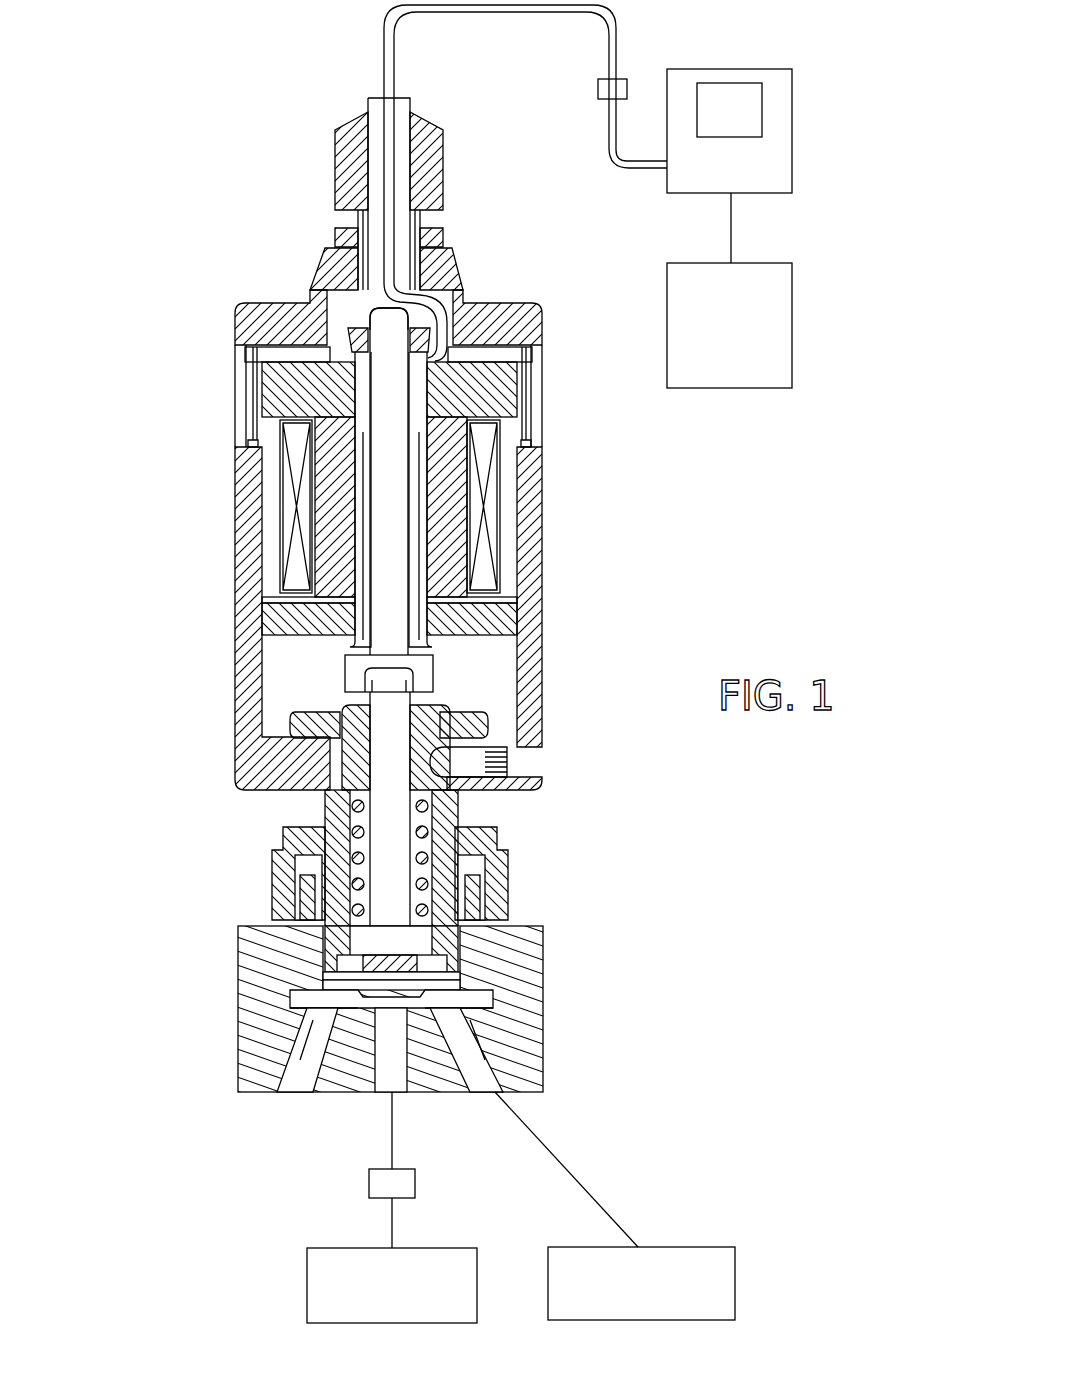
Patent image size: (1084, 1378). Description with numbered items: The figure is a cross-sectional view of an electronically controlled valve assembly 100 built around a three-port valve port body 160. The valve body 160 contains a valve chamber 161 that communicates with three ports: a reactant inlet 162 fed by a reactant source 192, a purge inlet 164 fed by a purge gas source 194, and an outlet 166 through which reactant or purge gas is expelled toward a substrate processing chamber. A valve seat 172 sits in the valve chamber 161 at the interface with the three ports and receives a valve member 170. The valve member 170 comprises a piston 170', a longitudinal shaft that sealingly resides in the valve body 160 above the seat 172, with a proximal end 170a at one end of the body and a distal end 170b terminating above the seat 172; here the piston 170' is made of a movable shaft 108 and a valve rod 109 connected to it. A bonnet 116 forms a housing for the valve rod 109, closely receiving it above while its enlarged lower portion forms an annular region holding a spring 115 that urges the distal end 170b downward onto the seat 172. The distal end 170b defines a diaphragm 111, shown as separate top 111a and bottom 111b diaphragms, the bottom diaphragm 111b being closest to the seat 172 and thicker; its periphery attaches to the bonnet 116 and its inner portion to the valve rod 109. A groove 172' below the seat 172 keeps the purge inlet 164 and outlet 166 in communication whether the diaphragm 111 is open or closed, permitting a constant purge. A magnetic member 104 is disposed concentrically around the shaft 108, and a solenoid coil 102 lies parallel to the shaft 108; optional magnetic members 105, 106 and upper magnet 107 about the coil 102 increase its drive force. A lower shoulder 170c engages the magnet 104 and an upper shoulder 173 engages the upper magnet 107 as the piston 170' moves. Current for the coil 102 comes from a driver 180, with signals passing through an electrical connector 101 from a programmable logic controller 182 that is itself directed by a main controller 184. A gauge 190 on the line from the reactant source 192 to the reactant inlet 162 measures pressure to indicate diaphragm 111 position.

The valve assembly 100 is at (231, 168).
The electrical connector 101 is at (598, 90).
The solenoid coil 102 is at (285, 475).
The magnetic member 104 is at (490, 618).
The magnetic member 105 is at (443, 470).
The magnetic member 106 is at (507, 523).
The upper magnet 107 is at (497, 383).
The movable shaft 108 is at (383, 360).
The valve rod 109 is at (392, 820).
The diaphragm 111 is at (640, 917).
The top diaphragm 111a is at (460, 985).
The bottom diaphragm 111b is at (460, 975).
The spring 115 is at (430, 830).
The bonnet 116 is at (345, 762).
The valve port body 160 is at (238, 1058).
The valve chamber 161 is at (290, 990).
The reactant inlet 162 is at (388, 1084).
The purge inlet 164 is at (487, 1092).
The outlet 166 is at (290, 1085).
The valve member 170 is at (489, 790).
The piston 170' is at (281, 481).
The proximal end 170a is at (382, 318).
The distal end 170b is at (375, 940).
The lower shoulder 170c is at (352, 670).
The valve seat 172 is at (449, 997).
The groove 172' is at (385, 1035).
The upper shoulder 173 is at (443, 355).
The driver 180 is at (750, 124).
The programmable logic controller 182 is at (750, 181).
The main controller 184 is at (750, 342).
The gauge 190 is at (368, 1181).
The reactant source 192 is at (307, 1284).
The purge gas source 194 is at (735, 1283).